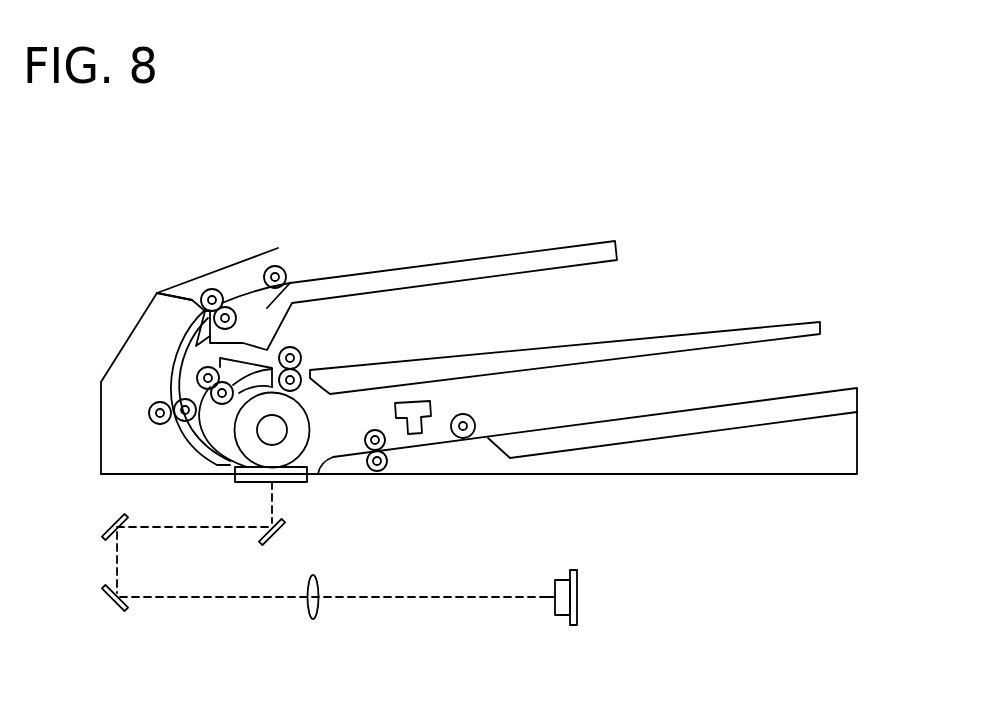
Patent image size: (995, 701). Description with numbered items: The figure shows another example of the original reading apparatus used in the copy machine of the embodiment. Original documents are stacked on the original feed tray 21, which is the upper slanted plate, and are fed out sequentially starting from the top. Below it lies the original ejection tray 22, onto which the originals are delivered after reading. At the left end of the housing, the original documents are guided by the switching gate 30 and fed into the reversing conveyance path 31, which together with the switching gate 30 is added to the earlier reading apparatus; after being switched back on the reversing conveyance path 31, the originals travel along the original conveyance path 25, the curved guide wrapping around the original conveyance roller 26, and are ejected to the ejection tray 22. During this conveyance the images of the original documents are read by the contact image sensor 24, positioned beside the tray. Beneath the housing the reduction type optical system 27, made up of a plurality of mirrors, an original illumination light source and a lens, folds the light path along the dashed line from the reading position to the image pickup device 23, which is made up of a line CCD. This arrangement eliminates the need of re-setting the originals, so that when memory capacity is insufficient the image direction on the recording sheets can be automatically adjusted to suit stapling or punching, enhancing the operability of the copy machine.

The original feed tray 21 is at (553, 247).
The original ejection tray 22 is at (813, 390).
The image pickup device 23 is at (578, 597).
The contact image sensor 24 is at (413, 400).
The original conveyance path 25 is at (170, 377).
The original conveyance roller 26 is at (247, 433).
The reduction type optical system 27 is at (443, 580).
The switching gate 30 is at (193, 337).
The reversing conveyance path 31 is at (347, 377).